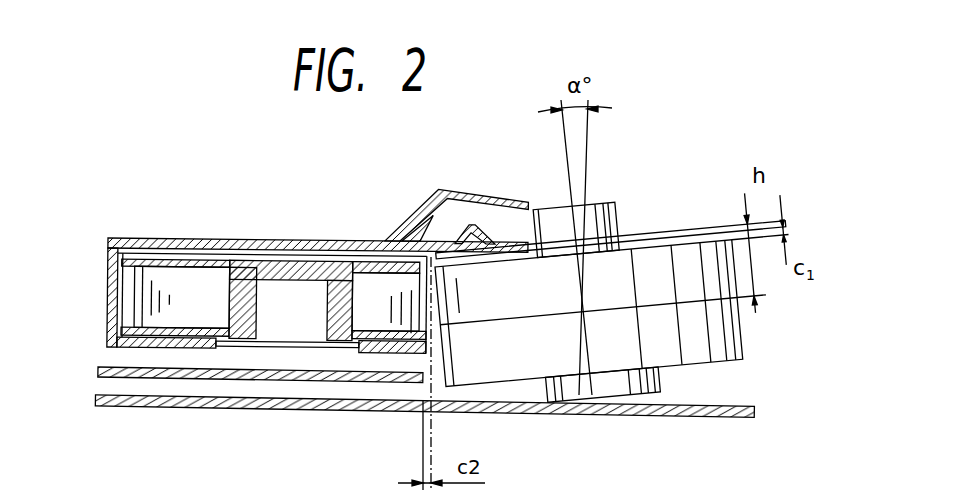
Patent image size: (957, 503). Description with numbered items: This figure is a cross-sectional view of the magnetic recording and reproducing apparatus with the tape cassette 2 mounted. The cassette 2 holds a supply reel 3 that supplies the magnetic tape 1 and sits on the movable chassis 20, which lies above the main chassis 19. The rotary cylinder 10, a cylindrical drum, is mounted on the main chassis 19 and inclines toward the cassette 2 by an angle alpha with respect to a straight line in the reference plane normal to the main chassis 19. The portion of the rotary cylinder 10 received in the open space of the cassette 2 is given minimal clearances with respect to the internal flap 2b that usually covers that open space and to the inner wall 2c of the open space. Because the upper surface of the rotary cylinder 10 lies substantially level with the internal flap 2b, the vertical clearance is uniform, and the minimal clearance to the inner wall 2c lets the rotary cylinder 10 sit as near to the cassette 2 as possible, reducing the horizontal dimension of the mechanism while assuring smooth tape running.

The magnetic tape 1 is at (175, 272).
The tape cassette 2 is at (115, 238).
The internal flap 2b is at (495, 240).
The inner wall 2c is at (425, 302).
The supply reel 3 is at (240, 263).
The rotary cylinder 10 is at (608, 205).
The main chassis 19 is at (710, 407).
The movable chassis 20 is at (200, 378).